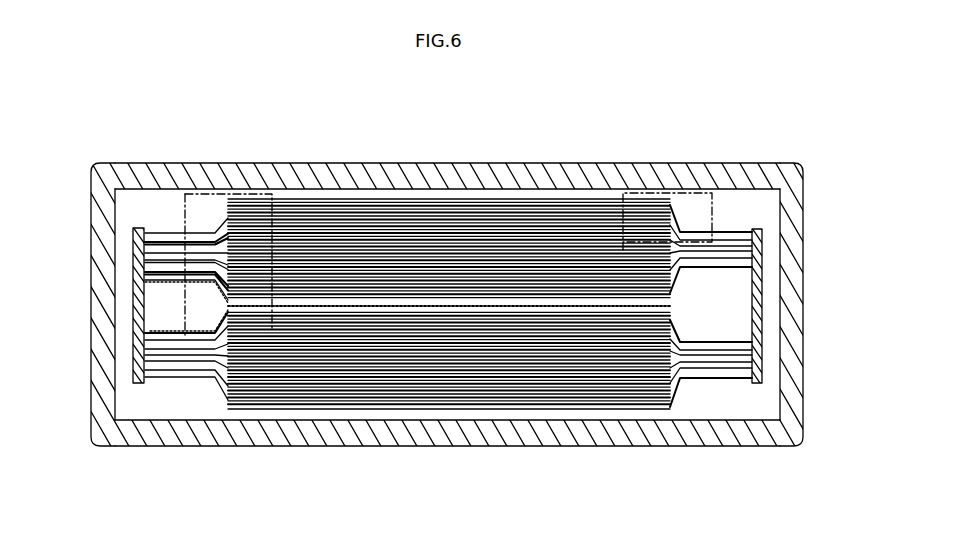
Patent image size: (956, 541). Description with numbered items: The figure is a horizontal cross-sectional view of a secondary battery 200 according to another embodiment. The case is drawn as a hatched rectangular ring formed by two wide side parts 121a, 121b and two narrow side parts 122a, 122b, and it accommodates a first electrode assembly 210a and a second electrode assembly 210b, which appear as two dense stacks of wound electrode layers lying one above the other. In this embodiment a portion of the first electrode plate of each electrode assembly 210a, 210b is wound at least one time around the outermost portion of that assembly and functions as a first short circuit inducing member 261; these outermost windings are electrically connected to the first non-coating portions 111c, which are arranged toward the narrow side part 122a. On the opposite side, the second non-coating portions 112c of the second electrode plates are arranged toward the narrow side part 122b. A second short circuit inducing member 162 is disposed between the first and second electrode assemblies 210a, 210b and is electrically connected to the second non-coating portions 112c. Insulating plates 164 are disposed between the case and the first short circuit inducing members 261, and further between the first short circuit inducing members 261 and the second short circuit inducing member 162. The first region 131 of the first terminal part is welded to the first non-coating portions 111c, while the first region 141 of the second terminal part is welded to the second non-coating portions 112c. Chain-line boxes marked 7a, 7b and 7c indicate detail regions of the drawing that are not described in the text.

The secondary battery 200 is at (824, 116).
The detail region of FIG. 7A 7a is at (663, 192).
The detail region of FIG. 7B 7b is at (183, 203).
The detail region of FIG. 7C 7c is at (185, 340).
The first non-coating portion 111c is at (728, 262).
The second non-coating portion 112c is at (173, 263).
The wide side part 121a is at (272, 435).
The wide side part 121b is at (346, 180).
The narrow side part 122a is at (798, 403).
The narrow side part 122b is at (97, 388).
The first region 131 is at (762, 307).
The first region 141 is at (147, 277).
The second short circuit inducing member 162 is at (164, 340).
The insulating plate 164 is at (455, 297).
The first electrode assembly 210a is at (589, 390).
The second electrode assembly 210b is at (588, 242).
The first short circuit inducing member 261 is at (742, 278).